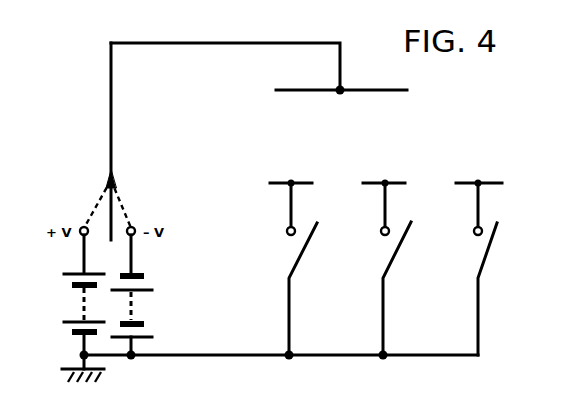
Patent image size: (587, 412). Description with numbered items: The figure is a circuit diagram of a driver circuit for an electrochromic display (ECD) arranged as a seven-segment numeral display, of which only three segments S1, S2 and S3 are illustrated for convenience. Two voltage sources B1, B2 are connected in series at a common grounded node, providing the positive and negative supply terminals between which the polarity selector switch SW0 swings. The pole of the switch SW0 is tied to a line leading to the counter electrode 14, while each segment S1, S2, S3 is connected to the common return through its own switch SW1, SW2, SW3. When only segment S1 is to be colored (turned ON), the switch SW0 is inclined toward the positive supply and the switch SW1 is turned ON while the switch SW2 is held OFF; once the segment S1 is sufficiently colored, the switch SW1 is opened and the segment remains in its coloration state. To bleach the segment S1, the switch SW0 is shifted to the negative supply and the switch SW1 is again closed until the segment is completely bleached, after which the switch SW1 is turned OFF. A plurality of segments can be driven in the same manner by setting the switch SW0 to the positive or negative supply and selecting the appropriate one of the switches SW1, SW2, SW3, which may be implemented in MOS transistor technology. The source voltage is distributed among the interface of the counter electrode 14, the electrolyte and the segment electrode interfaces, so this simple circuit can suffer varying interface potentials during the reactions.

The counter electrode 14 is at (341, 80).
The switch SW0 is at (94, 202).
The battery B1 is at (66, 295).
The battery B2 is at (145, 295).
The segment S1 is at (282, 197).
The segment S2 is at (380, 197).
The segment S3 is at (479, 197).
The switch SW1 is at (314, 289).
The switch SW2 is at (407, 288).
The switch SW3 is at (502, 289).